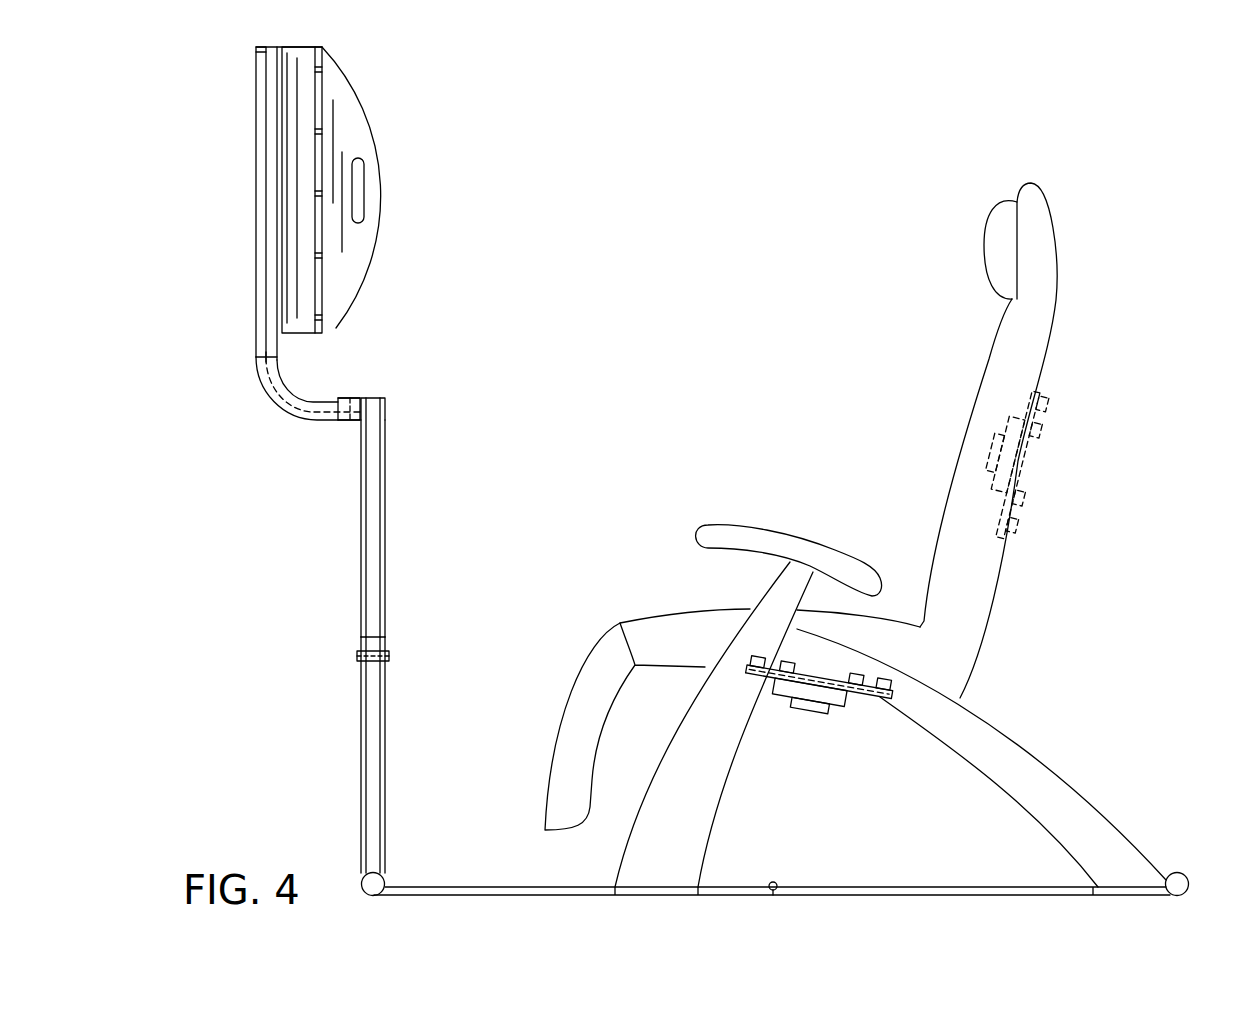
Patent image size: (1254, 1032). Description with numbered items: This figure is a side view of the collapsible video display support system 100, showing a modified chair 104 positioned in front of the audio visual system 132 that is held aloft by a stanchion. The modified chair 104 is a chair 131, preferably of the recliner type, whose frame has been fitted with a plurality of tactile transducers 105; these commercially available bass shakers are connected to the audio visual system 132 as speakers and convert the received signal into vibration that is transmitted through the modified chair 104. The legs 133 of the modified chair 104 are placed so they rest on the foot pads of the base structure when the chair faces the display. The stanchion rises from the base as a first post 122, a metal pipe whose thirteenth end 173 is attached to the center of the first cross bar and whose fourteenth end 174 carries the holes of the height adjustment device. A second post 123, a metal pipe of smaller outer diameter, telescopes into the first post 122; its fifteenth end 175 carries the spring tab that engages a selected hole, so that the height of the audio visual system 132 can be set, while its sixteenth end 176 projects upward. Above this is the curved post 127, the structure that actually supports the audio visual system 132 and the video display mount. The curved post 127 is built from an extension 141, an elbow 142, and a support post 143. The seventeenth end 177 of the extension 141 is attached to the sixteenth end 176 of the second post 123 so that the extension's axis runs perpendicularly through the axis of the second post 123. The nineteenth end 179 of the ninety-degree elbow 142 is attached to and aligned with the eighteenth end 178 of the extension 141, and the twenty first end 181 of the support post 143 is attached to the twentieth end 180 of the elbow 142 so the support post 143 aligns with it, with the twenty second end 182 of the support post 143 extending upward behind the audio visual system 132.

The collapsible video display support system 100 is at (916, 152).
The modified chair 104 is at (1092, 302).
The tactile transducers 105 is at (810, 703).
The chair 131 is at (997, 612).
The legs 133 is at (638, 855).
The curved post 127 is at (228, 244).
The audio visual system 132 is at (372, 134).
The support post 143 is at (258, 138).
The twenty second end 182 is at (264, 59).
The twenty first end 181 is at (258, 350).
The twentieth end 180 is at (266, 362).
The elbow 142 is at (274, 403).
The nineteenth end 179 is at (323, 398).
The extension 141 is at (352, 397).
The seventeenth end 177 is at (339, 400).
The eighteenth end 178 is at (340, 421).
The sixteenth end 176 is at (385, 412).
The second post 123 is at (386, 580).
The fifteenth end 175 is at (387, 634).
The fourteenth end 174 is at (390, 650).
The first post 122 is at (386, 760).
The thirteenth end 173 is at (368, 870).